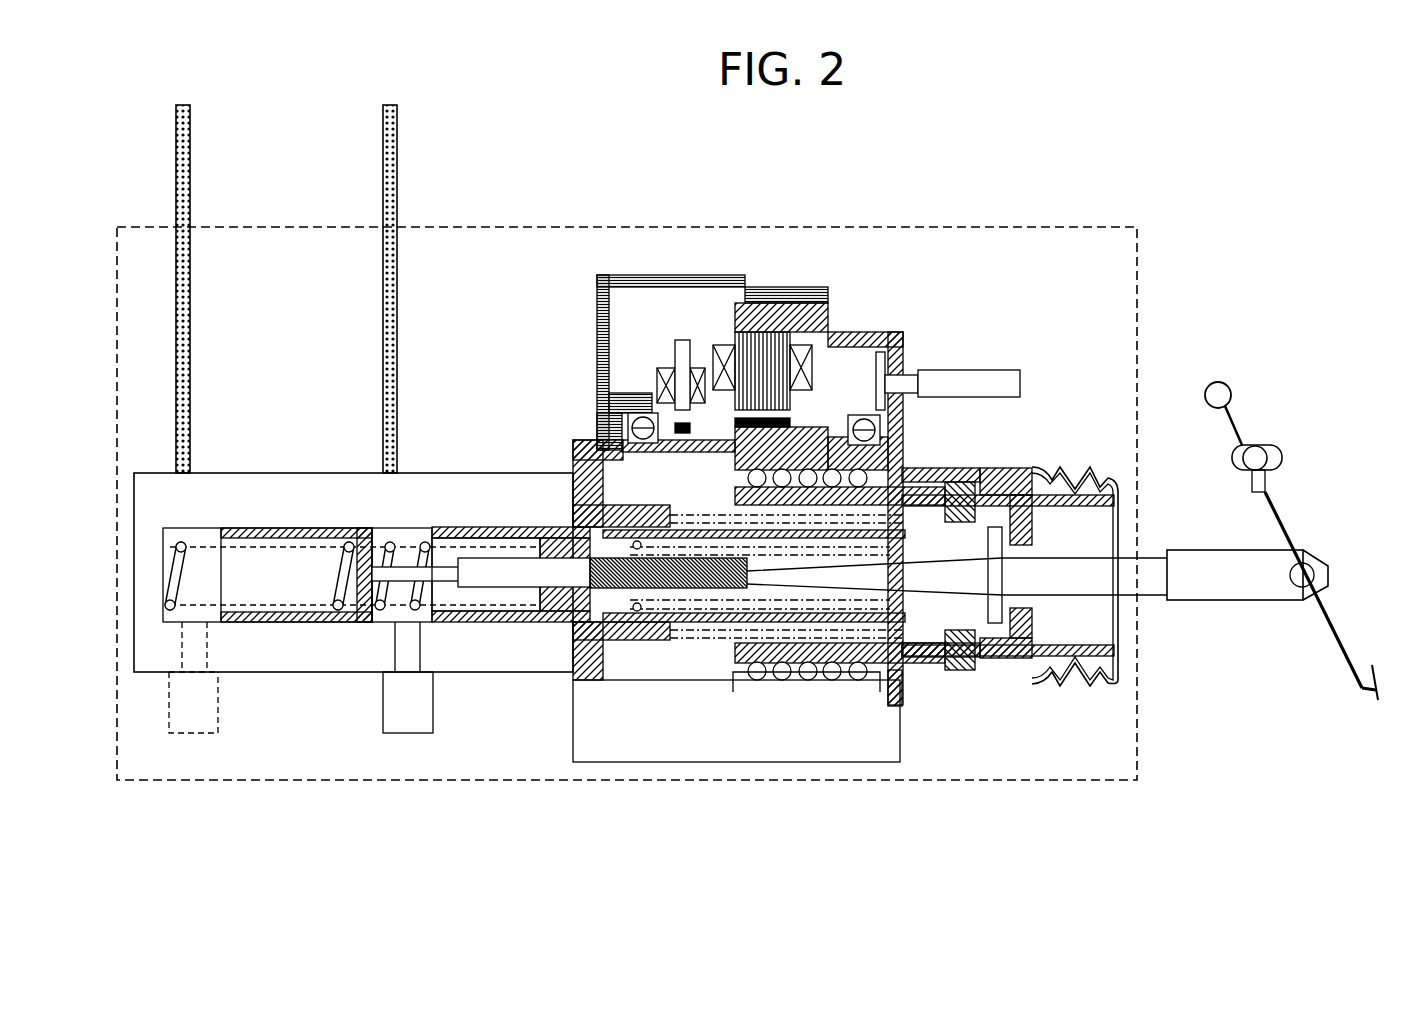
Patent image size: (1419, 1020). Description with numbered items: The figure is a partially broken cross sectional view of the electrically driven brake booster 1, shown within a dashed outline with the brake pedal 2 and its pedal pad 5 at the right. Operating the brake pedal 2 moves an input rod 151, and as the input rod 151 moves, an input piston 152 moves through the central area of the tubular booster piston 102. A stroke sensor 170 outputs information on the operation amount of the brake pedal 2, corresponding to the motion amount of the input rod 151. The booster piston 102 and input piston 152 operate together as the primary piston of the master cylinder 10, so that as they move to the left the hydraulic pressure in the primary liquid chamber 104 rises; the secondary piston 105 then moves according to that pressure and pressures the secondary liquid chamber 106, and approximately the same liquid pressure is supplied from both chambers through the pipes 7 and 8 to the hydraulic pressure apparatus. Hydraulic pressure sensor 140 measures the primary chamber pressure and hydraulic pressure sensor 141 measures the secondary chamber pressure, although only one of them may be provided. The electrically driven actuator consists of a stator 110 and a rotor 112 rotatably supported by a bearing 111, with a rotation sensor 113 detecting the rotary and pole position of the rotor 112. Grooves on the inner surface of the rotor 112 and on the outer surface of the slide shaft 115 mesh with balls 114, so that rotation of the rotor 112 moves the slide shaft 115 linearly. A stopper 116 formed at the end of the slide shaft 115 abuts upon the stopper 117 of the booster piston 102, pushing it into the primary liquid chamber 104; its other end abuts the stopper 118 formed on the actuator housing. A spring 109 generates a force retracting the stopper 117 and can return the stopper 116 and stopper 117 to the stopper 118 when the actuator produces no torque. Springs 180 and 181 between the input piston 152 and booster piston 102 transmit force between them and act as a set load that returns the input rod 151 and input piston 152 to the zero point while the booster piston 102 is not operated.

The electrically driven brake booster 1 is at (870, 227).
The brake pedal 2 is at (1330, 624).
The pedal pad 5 is at (1376, 678).
The pipe 7 is at (176, 143).
The pipe 8 is at (383, 143).
The master cylinder 10 is at (485, 473).
The booster piston 102 is at (555, 622).
The primary liquid chamber 104 is at (458, 600).
The secondary piston 105 is at (363, 622).
The secondary liquid chamber 106 is at (262, 600).
The spring 109 is at (846, 655).
The stator 110 is at (770, 350).
The bearing 111 is at (605, 411).
The rotor 112 is at (818, 450).
The rotation sensor 113 is at (680, 345).
The balls 114 is at (896, 442).
The slide shaft 115 is at (930, 492).
The stopper 116 is at (1000, 470).
The stopper 117 is at (985, 490).
The stopper 118 is at (1062, 480).
The hydraulic pressure sensor 140 is at (433, 728).
The hydraulic pressure sensor 141 is at (218, 728).
The input rod 151 is at (1070, 566).
The input piston 152 is at (697, 600).
The stroke sensor 170 is at (1283, 458).
The spring 180 is at (772, 615).
The spring 181 is at (640, 622).